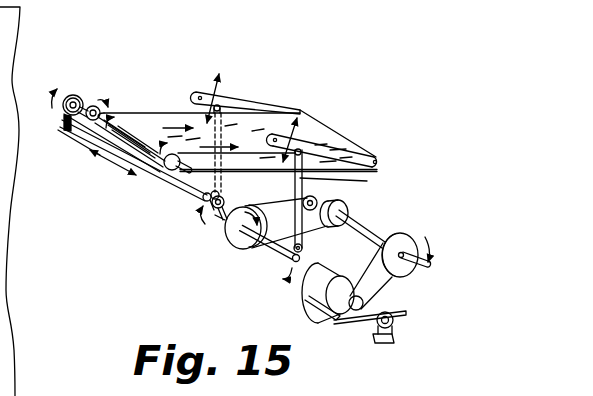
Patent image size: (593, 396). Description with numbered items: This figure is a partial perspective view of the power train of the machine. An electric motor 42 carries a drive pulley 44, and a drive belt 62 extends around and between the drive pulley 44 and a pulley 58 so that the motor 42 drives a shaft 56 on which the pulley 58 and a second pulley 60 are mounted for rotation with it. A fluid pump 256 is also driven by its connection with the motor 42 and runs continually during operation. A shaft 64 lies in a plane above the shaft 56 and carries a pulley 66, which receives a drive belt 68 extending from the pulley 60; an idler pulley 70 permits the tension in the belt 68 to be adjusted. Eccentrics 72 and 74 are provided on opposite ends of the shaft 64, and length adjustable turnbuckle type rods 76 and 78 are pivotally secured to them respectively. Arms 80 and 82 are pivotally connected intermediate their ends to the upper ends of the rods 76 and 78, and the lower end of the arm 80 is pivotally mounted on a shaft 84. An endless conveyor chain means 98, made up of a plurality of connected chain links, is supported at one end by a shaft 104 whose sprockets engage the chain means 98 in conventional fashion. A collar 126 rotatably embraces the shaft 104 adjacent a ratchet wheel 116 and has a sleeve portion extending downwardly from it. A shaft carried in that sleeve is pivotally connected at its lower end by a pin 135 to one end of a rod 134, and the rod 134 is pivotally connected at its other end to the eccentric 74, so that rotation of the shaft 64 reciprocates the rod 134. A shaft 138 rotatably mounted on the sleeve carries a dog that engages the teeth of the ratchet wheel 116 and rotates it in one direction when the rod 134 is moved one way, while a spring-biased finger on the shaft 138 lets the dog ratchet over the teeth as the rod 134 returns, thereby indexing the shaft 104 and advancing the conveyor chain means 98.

The electric motor 42 is at (308, 314).
The drive pulley 44 is at (334, 323).
The shaft 56 is at (367, 238).
The pulley 58 is at (412, 270).
The pulley 60 is at (355, 214).
The drive belt 62 is at (393, 315).
The shaft 64 is at (250, 255).
The pulley 66 is at (226, 242).
The drive belt 68 is at (272, 203).
The idler pulley 70 is at (320, 200).
The eccentric 72 is at (290, 270).
The eccentric 74 is at (212, 226).
The turnbuckle type rod 76 is at (303, 185).
The turnbuckle type rod 78 is at (213, 186).
The arm 80 is at (333, 152).
The arm 82 is at (252, 96).
The shaft 84 is at (380, 160).
The endless conveyor chain means 98 is at (151, 114).
The shaft 104 is at (83, 136).
The ratchet wheel 116 is at (96, 105).
The collar 126 is at (70, 94).
The rod 134 is at (187, 176).
The pin 135 is at (64, 126).
The shaft 138 is at (0, 227).
The fluid pump 256 is at (375, 344).